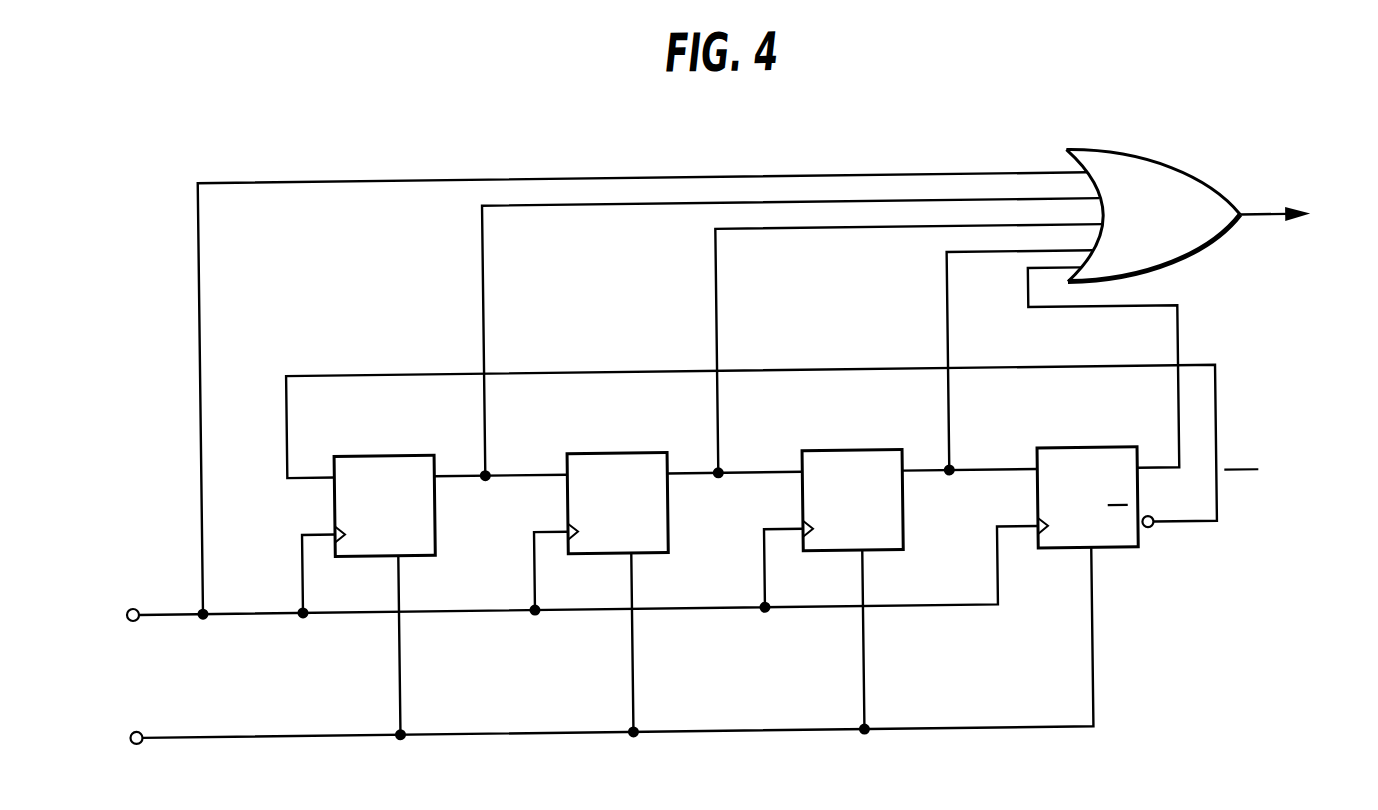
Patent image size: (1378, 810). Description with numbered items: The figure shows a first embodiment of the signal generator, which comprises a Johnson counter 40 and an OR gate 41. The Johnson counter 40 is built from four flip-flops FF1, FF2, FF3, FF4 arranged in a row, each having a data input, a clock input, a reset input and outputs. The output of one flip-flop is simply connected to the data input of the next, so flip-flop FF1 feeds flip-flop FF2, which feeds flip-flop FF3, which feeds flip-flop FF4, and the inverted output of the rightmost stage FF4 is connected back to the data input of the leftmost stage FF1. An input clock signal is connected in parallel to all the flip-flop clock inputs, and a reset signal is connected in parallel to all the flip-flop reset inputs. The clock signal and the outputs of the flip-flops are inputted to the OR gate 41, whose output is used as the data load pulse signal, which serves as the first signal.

The Johnson counter 40 is at (741, 753).
The OR gate 41 is at (1105, 160).
The flip-flop FF1 is at (385, 488).
The flip-flop FF2 is at (618, 485).
The flip-flop FF3 is at (853, 483).
The flip-flop FF4 is at (1095, 480).